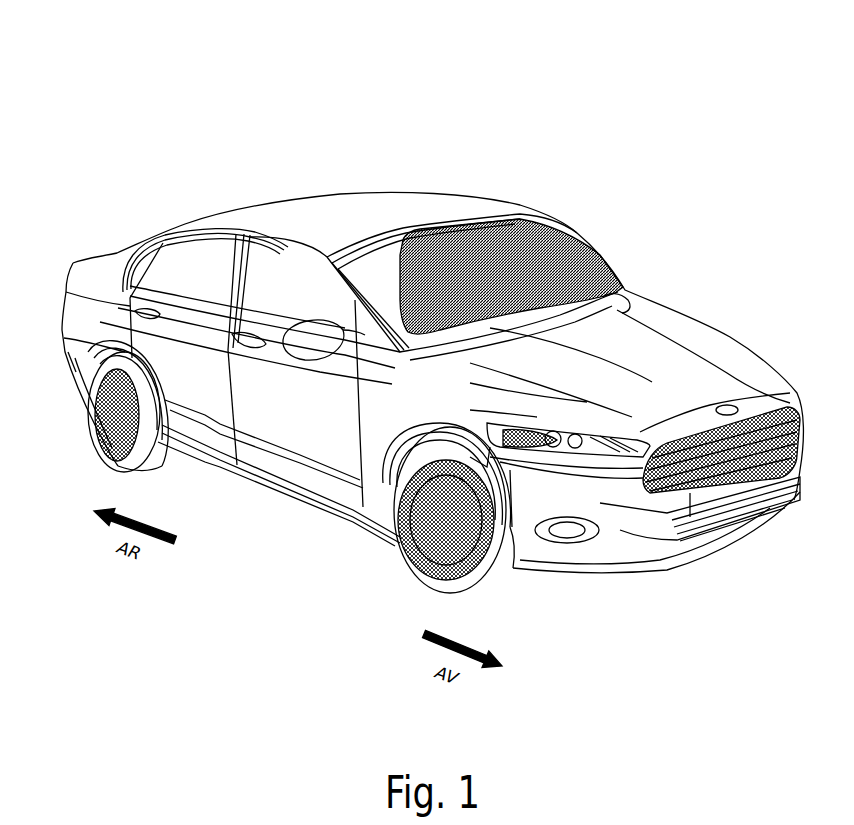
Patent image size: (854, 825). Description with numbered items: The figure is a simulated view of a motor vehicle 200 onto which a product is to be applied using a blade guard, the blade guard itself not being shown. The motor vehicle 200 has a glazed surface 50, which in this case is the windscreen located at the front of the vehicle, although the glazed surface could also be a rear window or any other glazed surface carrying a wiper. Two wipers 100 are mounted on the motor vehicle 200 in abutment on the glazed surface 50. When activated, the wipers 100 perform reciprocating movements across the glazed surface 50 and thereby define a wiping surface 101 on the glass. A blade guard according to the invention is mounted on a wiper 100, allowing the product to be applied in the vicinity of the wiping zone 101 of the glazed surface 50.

The motor vehicle 200 is at (432, 300).
The glazed surface 50 is at (373, 255).
The wiper 100 is at (525, 221).
The wiping surface 101 is at (500, 261).